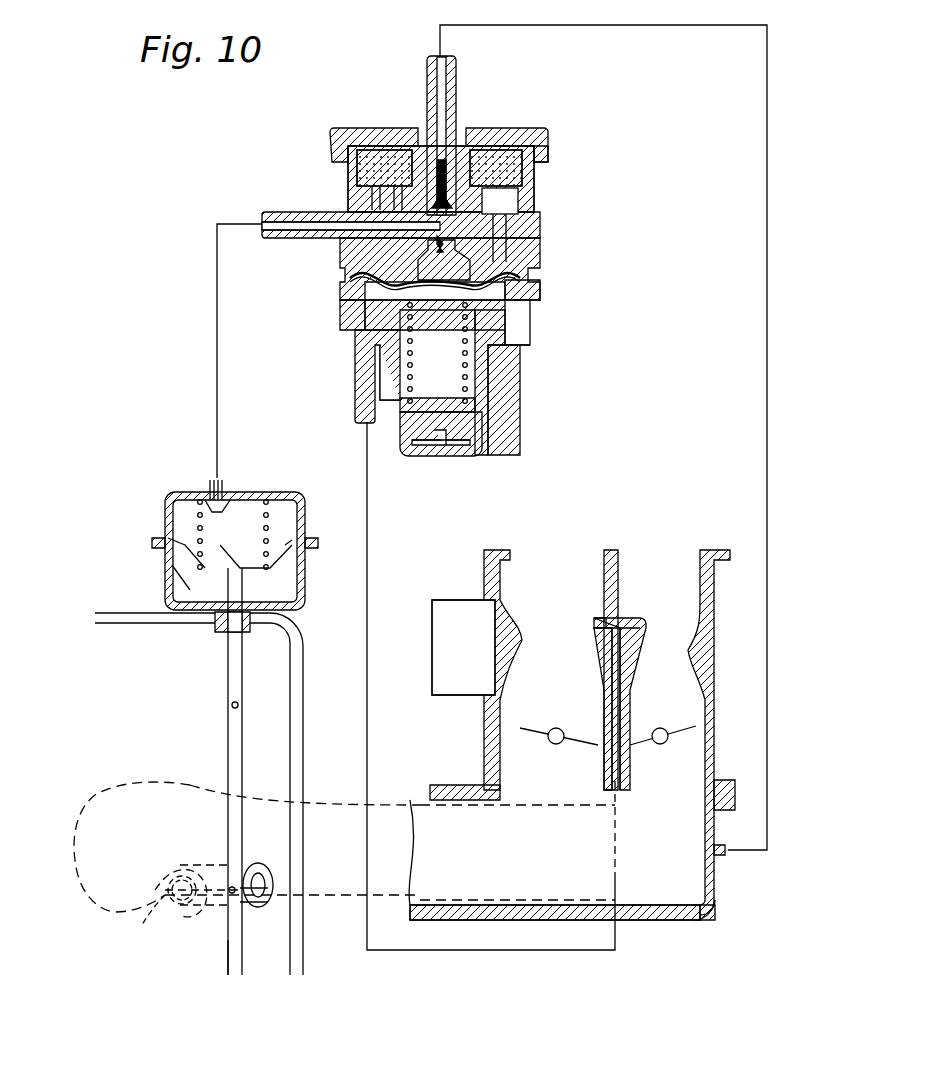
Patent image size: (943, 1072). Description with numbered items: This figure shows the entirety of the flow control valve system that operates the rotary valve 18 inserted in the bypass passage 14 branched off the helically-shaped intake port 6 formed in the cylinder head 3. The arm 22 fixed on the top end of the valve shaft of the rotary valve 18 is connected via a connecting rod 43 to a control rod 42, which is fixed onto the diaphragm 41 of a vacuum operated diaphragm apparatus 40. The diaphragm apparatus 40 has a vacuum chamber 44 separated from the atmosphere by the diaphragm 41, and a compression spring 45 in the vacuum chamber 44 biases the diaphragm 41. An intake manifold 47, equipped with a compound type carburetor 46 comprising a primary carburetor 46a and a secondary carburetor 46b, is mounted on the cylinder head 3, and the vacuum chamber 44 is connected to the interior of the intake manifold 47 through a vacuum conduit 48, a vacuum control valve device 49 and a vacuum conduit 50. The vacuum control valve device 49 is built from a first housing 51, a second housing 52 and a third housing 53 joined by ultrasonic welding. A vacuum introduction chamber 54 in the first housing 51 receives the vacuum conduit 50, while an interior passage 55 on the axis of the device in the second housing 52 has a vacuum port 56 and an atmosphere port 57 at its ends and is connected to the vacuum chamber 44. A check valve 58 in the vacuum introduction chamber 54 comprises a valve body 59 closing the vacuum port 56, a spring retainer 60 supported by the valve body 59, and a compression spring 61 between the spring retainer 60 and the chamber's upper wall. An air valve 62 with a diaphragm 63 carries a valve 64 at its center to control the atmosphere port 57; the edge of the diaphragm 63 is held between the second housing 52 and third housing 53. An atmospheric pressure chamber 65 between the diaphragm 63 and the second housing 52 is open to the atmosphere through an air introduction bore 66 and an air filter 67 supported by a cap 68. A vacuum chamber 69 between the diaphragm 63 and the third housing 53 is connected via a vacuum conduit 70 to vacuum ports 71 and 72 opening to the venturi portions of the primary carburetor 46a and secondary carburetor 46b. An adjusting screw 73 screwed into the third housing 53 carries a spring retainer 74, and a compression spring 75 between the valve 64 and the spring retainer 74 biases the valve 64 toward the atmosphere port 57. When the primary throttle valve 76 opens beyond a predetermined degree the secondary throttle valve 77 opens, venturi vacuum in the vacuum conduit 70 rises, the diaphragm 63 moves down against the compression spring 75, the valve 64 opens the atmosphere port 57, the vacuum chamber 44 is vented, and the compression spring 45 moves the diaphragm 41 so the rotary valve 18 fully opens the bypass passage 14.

The cylinder head 3 is at (120, 620).
The helically-shaped intake port 6 is at (186, 800).
The bypass passage 14 is at (156, 895).
The rotary valve 18 is at (182, 900).
The arm 22 is at (256, 905).
The vacuum operated diaphragm apparatus 40 is at (160, 492).
The diaphragm 41 is at (175, 575).
The control rod 42 is at (228, 690).
The connecting rod 43 is at (228, 948).
The vacuum chamber 44 is at (302, 520).
The compression spring 45 is at (268, 515).
The compound type carburetor 46 is at (495, 544).
The primary carburetor 46a is at (677, 534).
The secondary carburetor 46b is at (577, 534).
The intake manifold 47 is at (672, 920).
The vacuum conduit 48 is at (215, 341).
The vacuum control valve device 49 is at (343, 124).
The vacuum conduit 50 is at (638, 25).
The first housing 51 is at (462, 170).
The second housing 52 is at (500, 240).
The third housing 53 is at (518, 340).
The vacuum introduction chamber 54 is at (432, 185).
The interior passage 55 is at (490, 260).
The vacuum port 56 is at (520, 222).
The atmosphere port 57 is at (470, 270).
The check valve 58 is at (446, 160).
The valve body 59 is at (428, 210).
The spring retainer 60 is at (375, 198).
The compression spring 61 is at (360, 170).
The air valve 62 is at (368, 306).
The diaphragm 63 is at (525, 330).
The valve 64 is at (370, 340).
The atmospheric pressure chamber 65 is at (365, 280).
The air introduction bore 66 is at (540, 282).
The air filter 67 is at (505, 170).
The cap 68 is at (518, 132).
The vacuum chamber 69 is at (455, 400).
The vacuum conduit 70 is at (432, 955).
The vacuum port 71 is at (642, 625).
The vacuum port 72 is at (592, 626).
The adjusting screw 73 is at (460, 438).
The spring retainer 74 is at (480, 420).
The compression spring 75 is at (440, 372).
The primary throttle valve 76 is at (684, 725).
The secondary throttle valve 77 is at (580, 735).